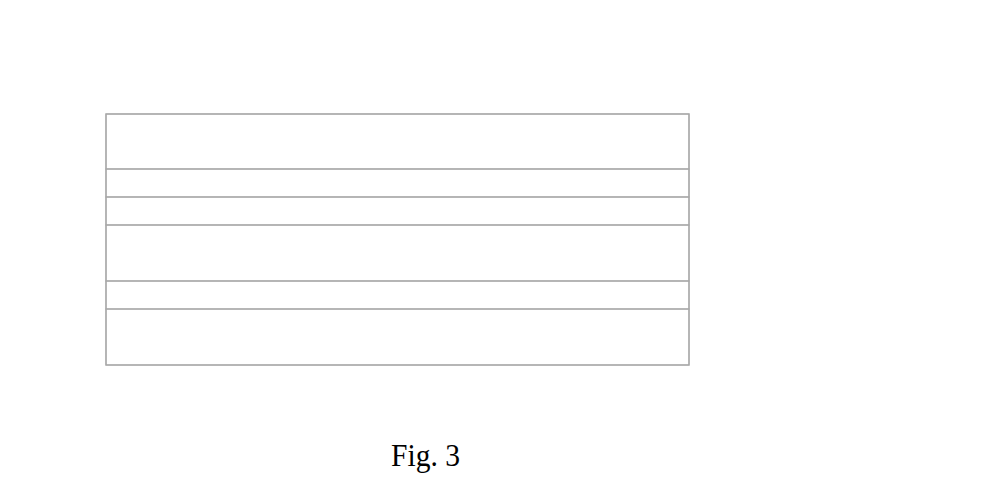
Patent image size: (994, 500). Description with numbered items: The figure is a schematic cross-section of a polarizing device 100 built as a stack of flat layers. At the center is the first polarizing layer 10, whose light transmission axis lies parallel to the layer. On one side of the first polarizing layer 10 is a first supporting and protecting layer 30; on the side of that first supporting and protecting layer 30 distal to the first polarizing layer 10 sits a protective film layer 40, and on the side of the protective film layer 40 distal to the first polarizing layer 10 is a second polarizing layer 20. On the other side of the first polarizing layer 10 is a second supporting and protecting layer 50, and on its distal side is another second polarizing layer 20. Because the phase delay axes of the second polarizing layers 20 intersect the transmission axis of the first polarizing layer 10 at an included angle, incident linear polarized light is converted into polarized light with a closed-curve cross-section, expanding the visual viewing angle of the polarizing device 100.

The polarizing device 100 is at (85, 46).
The second polarizing layer 20 is at (689, 142).
The protective film layer 40 is at (689, 185).
The first supporting and protecting layer 30 is at (689, 212).
The first polarizing layer 10 is at (689, 253).
The second supporting and protecting layer 50 is at (689, 294).